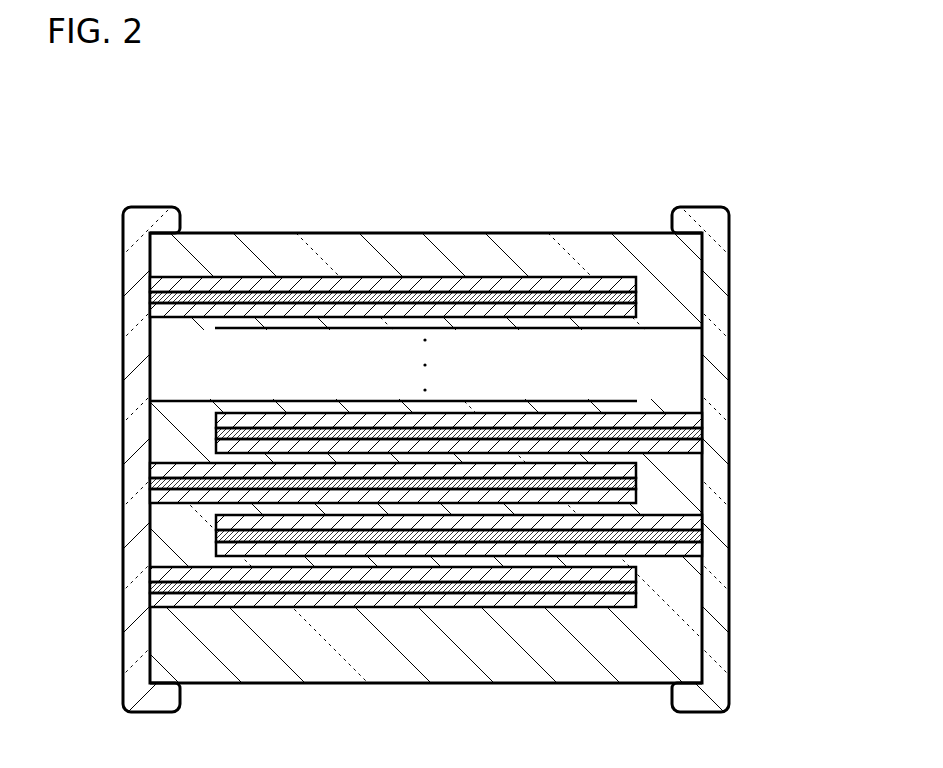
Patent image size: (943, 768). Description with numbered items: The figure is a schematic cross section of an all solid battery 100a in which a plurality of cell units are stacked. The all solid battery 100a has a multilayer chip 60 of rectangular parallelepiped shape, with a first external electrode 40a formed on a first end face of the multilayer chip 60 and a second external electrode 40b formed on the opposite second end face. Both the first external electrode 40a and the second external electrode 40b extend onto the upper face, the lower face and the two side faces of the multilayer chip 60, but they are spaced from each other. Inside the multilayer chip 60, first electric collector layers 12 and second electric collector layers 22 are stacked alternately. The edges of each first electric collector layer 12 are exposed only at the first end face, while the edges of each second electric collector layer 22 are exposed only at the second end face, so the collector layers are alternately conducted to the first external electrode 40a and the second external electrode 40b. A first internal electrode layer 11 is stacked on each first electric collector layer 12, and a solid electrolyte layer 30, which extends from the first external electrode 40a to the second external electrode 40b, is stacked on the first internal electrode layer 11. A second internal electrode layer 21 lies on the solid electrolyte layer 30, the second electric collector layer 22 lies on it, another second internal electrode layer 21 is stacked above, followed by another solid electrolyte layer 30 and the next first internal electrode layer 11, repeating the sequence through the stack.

The all solid battery 100a is at (835, 110).
The multilayer chip 60 is at (534, 222).
The solid electrolyte layer 30 is at (320, 562).
The first internal electrode layer 11 is at (163, 475).
The first electric collector layer 12 is at (163, 483).
The second internal electrode layer 21 is at (695, 518).
The second electric collector layer 22 is at (695, 537).
The first external electrode 40a is at (122, 306).
The second external electrode 40b is at (731, 307).